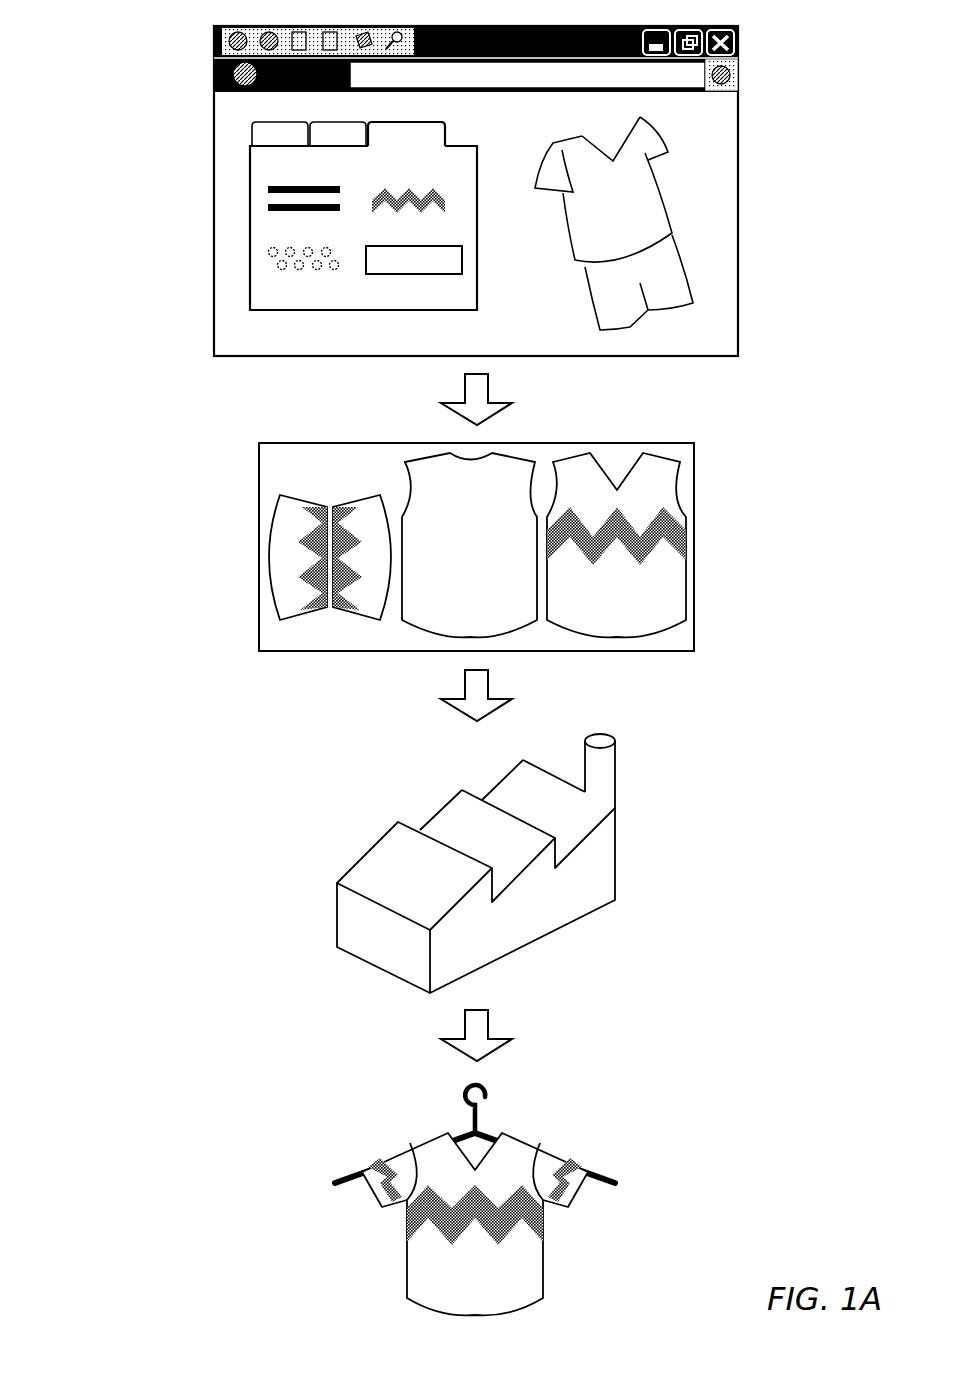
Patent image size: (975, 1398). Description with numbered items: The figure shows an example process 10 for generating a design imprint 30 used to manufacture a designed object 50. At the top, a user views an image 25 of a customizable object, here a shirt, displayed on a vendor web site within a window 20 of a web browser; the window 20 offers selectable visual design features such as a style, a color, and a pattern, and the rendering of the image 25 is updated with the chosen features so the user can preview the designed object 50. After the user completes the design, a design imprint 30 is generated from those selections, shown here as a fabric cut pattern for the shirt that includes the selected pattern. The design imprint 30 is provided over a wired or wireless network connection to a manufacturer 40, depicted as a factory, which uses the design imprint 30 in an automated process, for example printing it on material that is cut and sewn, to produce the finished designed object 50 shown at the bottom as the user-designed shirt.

The process 10 is at (143, 42).
The window 20 is at (739, 192).
The image 25 is at (585, 283).
The design imprint 30 is at (693, 550).
The manufacturer 40 is at (615, 847).
The designed object 50 is at (543, 1238).